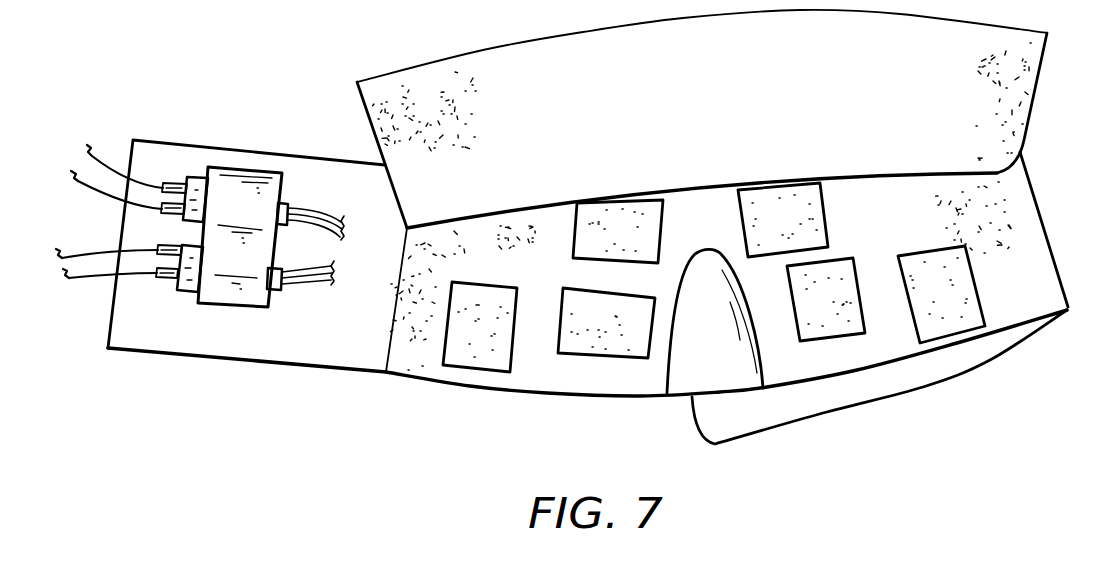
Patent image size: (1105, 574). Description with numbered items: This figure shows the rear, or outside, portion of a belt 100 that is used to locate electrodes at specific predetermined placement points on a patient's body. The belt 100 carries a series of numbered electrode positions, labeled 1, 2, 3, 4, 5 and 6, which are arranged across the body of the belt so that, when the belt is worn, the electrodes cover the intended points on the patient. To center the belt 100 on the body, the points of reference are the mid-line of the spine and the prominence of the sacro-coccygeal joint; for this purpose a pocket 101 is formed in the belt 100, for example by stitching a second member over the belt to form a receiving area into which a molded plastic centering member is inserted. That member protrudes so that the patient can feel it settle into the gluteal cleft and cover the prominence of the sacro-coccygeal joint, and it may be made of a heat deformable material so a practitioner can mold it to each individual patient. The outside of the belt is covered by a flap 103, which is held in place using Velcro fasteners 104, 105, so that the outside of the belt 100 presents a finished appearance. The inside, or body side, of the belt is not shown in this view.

The belt 100 is at (402, 403).
The pocket 101 is at (693, 355).
The flap 103 is at (407, 85).
The Velcro fastener 104 is at (356, 92).
The Velcro fastener 105 is at (422, 362).
The electrode pad 1 is at (618, 231).
The electrode pad 2 is at (783, 220).
The electrode pad 3 is at (606, 323).
The electrode pad 4 is at (826, 299).
The electrode pad 5 is at (480, 327).
The electrode pad 6 is at (941, 294).